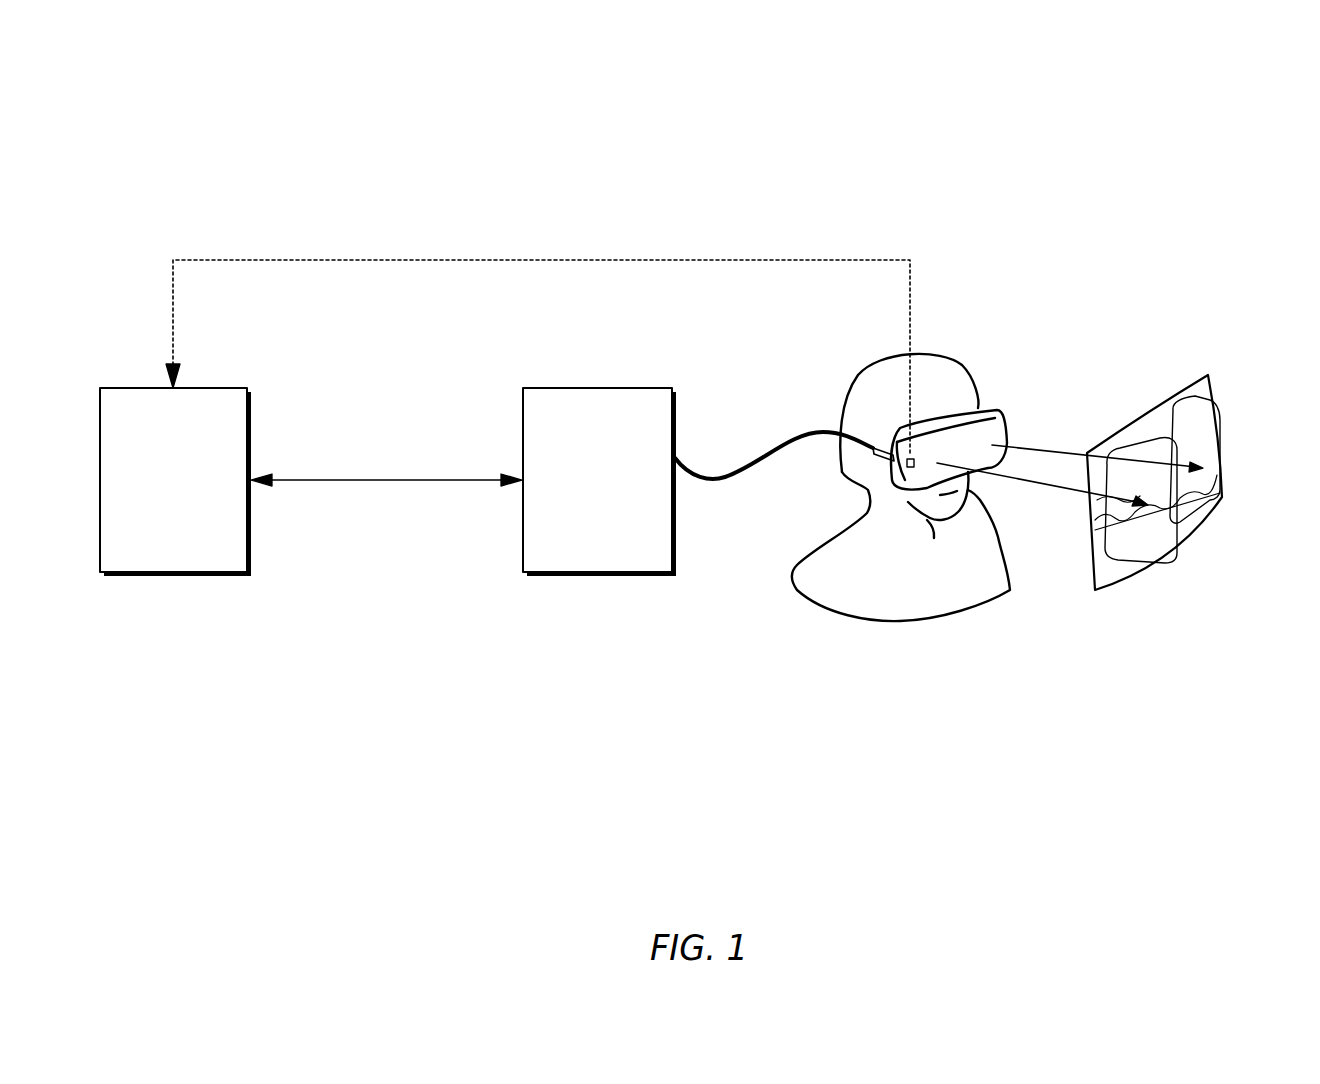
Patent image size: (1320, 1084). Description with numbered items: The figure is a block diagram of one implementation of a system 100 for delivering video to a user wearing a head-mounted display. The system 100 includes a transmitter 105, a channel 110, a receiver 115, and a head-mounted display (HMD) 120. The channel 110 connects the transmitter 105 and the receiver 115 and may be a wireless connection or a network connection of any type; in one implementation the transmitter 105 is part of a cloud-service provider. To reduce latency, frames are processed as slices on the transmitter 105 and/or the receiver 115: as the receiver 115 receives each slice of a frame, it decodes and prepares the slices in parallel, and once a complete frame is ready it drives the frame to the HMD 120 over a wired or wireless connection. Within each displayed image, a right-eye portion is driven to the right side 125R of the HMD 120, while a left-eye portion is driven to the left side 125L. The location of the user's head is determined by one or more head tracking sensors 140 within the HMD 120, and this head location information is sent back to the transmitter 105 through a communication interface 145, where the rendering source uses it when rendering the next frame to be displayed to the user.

The system 100 is at (1253, 90).
The transmitter 105 is at (193, 502).
The channel 110 is at (386, 479).
The receiver 115 is at (617, 502).
The head-mounted display 120 is at (988, 412).
The left side of HMD 125L is at (1180, 408).
The right side of HMD 125R is at (1130, 440).
The head tracking sensor 140 is at (862, 478).
The communication interface 145 is at (515, 259).